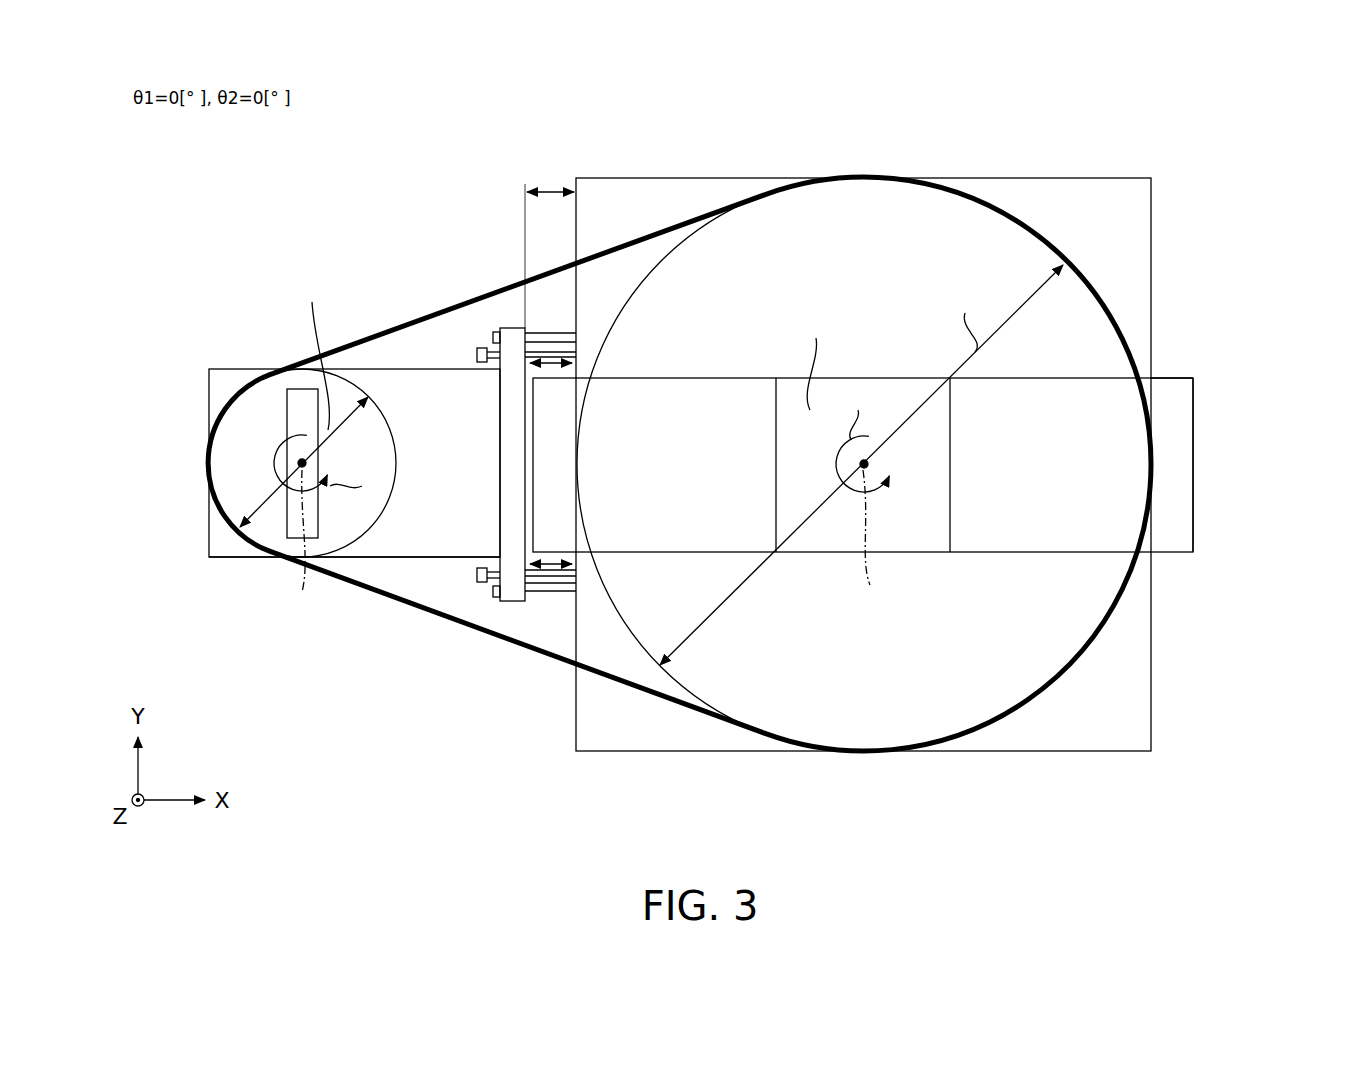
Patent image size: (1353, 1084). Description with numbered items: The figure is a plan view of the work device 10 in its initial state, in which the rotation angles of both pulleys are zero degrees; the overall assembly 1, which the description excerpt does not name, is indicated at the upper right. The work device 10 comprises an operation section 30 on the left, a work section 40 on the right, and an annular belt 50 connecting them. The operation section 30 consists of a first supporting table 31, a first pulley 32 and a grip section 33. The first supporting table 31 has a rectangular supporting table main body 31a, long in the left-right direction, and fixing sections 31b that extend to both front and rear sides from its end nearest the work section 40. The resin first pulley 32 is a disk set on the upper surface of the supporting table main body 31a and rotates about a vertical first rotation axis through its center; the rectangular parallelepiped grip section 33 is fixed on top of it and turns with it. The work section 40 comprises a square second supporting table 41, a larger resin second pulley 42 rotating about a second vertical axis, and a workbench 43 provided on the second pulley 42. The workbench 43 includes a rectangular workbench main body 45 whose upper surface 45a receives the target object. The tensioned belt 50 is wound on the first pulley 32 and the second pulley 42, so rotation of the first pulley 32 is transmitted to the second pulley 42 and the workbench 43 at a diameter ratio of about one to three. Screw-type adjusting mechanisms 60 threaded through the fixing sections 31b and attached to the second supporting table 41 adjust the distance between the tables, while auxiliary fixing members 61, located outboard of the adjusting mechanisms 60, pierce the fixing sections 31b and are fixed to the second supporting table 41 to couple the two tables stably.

The robot system 1 is at (1163, 157).
The work device 10 is at (408, 225).
The operation section 30 is at (372, 674).
The first supporting table 31 is at (230, 364).
The supporting table main body 31a is at (428, 535).
The fixing sections 31b is at (508, 330).
The first pulley 32 is at (240, 459).
The grip section 33 is at (298, 407).
The work section 40 is at (588, 758).
The second supporting table 41 is at (1122, 222).
The second pulley 42 is at (921, 212).
The workbench 43 is at (1200, 440).
The workbench main body 45 is at (1175, 545).
The upper surface 45a is at (1176, 403).
The belt 50 is at (703, 718).
The adjusting mechanisms 60 is at (560, 352).
The auxiliary fixing members 61 is at (553, 333).